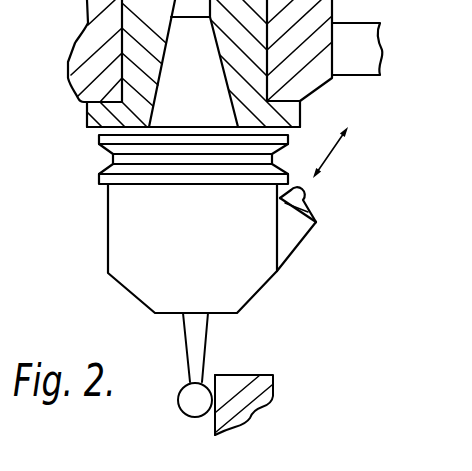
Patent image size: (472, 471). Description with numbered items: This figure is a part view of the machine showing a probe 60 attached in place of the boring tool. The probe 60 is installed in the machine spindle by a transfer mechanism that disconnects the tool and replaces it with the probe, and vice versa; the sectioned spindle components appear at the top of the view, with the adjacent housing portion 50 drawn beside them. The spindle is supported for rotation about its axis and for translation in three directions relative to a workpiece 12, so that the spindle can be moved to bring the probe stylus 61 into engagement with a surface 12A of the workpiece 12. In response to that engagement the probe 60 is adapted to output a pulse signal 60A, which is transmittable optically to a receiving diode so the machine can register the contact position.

The machine tool spindle housing 50 is at (370, 52).
The probe 60 is at (207, 257).
The pulse signal 60A is at (331, 152).
The stylus with ball tip 61 is at (197, 337).
The workpiece 12 is at (235, 378).
The surface 12A is at (213, 426).